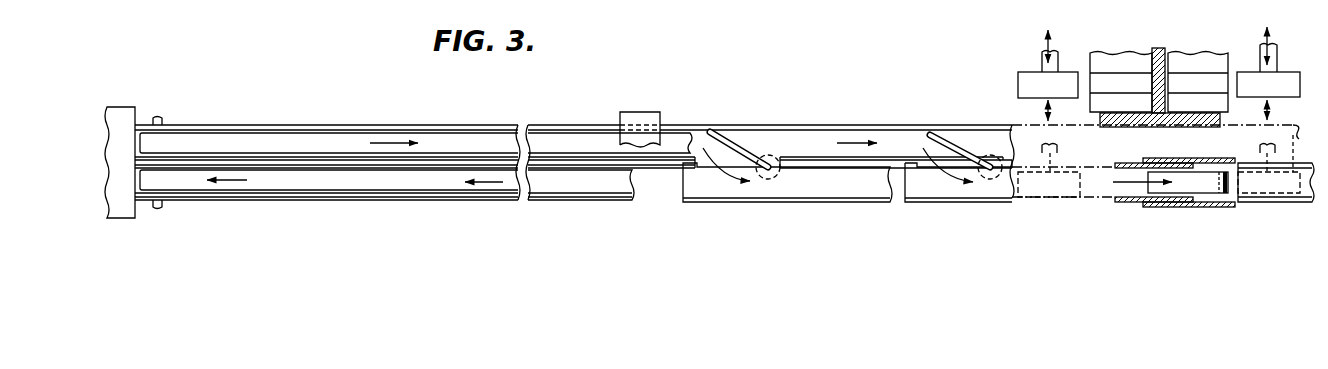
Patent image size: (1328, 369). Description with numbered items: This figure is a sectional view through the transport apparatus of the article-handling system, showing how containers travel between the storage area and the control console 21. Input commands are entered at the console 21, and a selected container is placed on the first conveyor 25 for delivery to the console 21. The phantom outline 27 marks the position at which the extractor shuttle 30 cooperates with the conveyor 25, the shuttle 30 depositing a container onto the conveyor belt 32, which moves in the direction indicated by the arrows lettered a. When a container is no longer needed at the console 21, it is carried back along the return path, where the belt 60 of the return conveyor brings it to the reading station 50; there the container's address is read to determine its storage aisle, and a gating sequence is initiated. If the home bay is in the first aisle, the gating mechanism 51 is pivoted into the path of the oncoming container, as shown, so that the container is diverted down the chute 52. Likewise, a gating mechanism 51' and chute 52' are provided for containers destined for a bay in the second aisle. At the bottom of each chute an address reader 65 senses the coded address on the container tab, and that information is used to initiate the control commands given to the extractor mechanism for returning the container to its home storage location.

The control console 21 is at (128, 106).
The first conveyor 25 is at (477, 203).
The conveyor belt 32 is at (388, 183).
The belt of return conveyor 60 is at (577, 145).
The reading station 50 is at (649, 118).
The gating mechanism 51 is at (741, 133).
The gating mechanism 51' is at (962, 133).
The chute 52 is at (848, 186).
The phantom outline 27 is at (1063, 192).
The extractor shuttle 30 is at (1022, 67).
The chute 52' is at (1147, 205).
The address readers 65 is at (1190, 207).